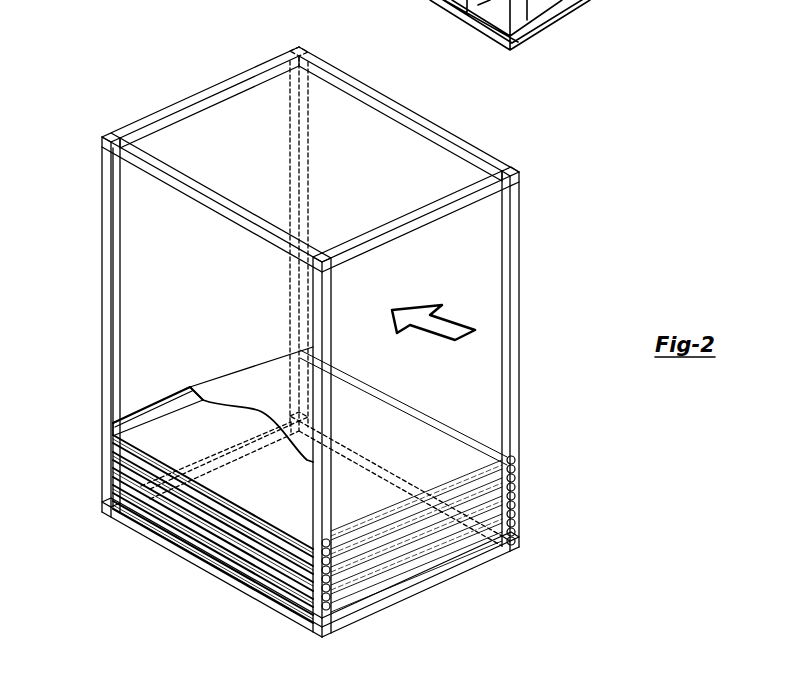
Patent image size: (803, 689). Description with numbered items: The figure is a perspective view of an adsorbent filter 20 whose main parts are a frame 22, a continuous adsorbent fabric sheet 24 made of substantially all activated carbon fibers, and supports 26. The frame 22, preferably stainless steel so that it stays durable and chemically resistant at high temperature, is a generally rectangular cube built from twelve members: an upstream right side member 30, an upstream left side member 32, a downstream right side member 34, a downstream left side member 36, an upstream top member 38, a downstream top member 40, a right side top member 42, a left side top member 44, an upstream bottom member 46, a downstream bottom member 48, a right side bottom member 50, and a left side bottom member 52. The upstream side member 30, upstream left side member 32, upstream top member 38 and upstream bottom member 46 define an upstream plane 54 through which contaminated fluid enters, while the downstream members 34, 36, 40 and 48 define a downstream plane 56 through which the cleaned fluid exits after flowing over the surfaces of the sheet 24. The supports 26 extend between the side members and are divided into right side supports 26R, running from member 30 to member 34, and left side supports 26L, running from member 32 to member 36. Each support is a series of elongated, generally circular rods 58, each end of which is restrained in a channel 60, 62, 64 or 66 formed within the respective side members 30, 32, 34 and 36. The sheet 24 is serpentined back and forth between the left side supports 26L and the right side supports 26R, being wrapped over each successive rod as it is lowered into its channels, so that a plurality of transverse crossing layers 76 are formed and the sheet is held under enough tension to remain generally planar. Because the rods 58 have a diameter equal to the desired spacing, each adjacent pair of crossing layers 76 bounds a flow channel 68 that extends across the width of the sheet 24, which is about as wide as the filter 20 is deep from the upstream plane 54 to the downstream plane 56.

The adsorbent filter 20 is at (552, 302).
The frame 22 is at (513, 380).
The continuous adsorbent fabric sheet 24 is at (278, 485).
The supports 26 is at (517, 523).
The left side supports 26L is at (118, 436).
The right side supports 26R is at (513, 533).
The upstream right side member 30 is at (517, 417).
The upstream left side member 32 is at (318, 311).
The downstream right side member 34 is at (307, 137).
The downstream left side member 36 is at (107, 232).
The upstream top member 38 is at (472, 190).
The downstream top member 40 is at (207, 93).
The right side top member 42 is at (433, 127).
The left side top member 44 is at (160, 173).
The upstream bottom member 46 is at (467, 573).
The downstream bottom member 48 is at (200, 462).
The right side bottom member 50 is at (510, 510).
The left side bottom member 52 is at (233, 580).
The upstream plane 54 is at (457, 257).
The downstream plane 56 is at (260, 123).
The rods 58 is at (462, 432).
The channel 60 is at (505, 345).
The channel 62 is at (318, 335).
The channel 64 is at (307, 97).
The channel 66 is at (113, 315).
The flow channel 68 is at (423, 567).
The crossing layers 76 is at (393, 590).